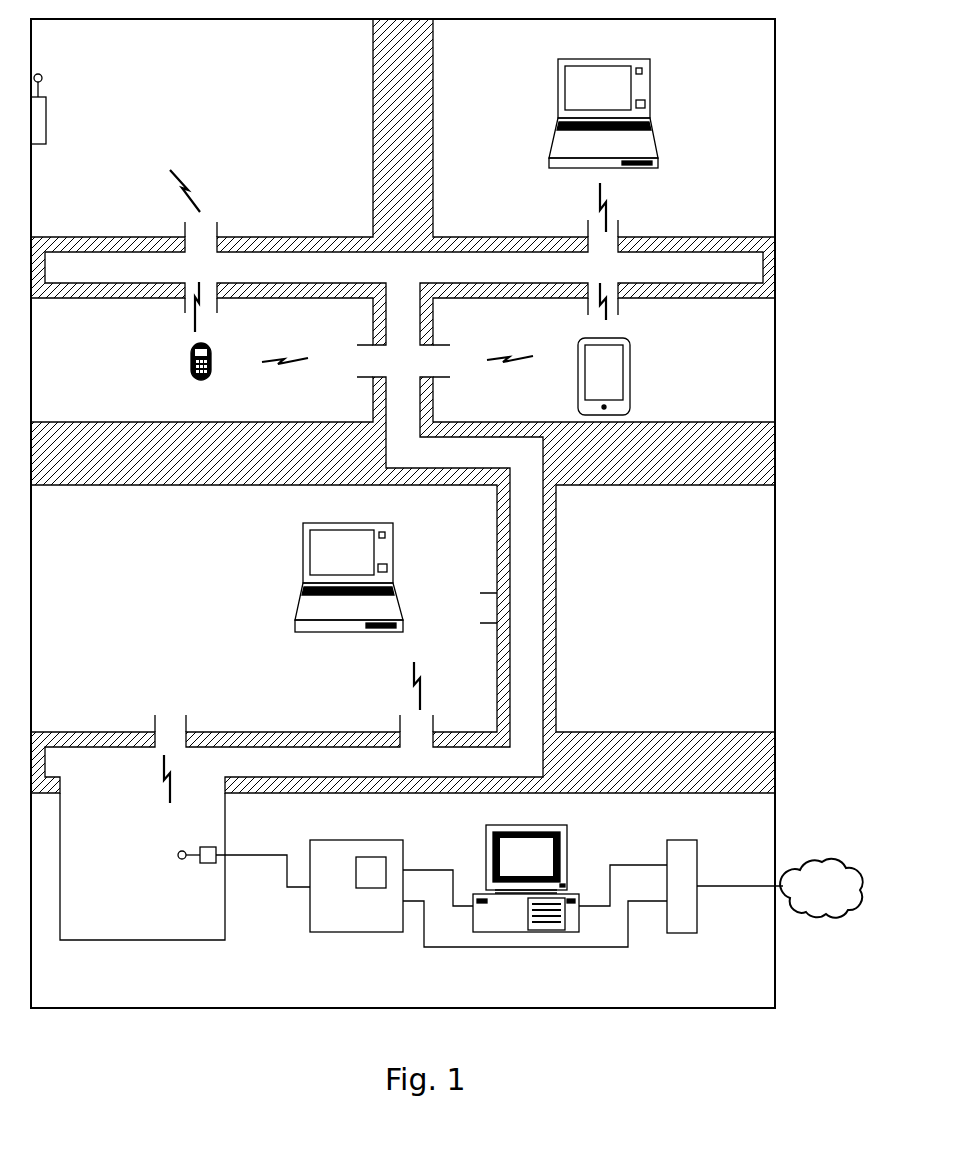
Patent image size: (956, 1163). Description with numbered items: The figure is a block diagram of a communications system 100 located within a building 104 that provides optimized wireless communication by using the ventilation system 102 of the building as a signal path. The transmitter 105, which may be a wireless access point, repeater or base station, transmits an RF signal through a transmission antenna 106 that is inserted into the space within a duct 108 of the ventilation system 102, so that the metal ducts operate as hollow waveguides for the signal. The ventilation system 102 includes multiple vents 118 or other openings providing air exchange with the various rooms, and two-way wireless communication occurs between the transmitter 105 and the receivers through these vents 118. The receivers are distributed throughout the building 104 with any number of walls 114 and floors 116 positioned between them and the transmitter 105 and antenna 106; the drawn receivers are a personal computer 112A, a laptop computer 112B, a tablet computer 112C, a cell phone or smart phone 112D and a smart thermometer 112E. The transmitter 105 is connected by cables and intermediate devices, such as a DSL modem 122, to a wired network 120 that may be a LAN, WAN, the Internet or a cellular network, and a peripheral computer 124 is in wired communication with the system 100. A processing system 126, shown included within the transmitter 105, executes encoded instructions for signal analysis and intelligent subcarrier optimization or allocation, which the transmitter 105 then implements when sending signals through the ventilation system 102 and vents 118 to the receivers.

The communications system 100 is at (800, 538).
The ventilation system 102 is at (775, 250).
The building 104 is at (775, 138).
The transmitter 105 is at (355, 932).
The transmission antenna 106 is at (210, 863).
The duct 108 is at (452, 438).
The personal computer 112A is at (650, 114).
The laptop computer 112B is at (393, 575).
The tablet computer 112C is at (630, 366).
The cell phone or smart phone 112D is at (211, 362).
The smart thermometer 112E is at (46, 118).
The wall 114 is at (433, 139).
The floor 116 is at (205, 422).
The vent 118 is at (210, 222).
The wired network 120 is at (838, 857).
The DSL modem 122 is at (682, 933).
The computer 124 is at (567, 856).
The processing system 126 is at (371, 857).